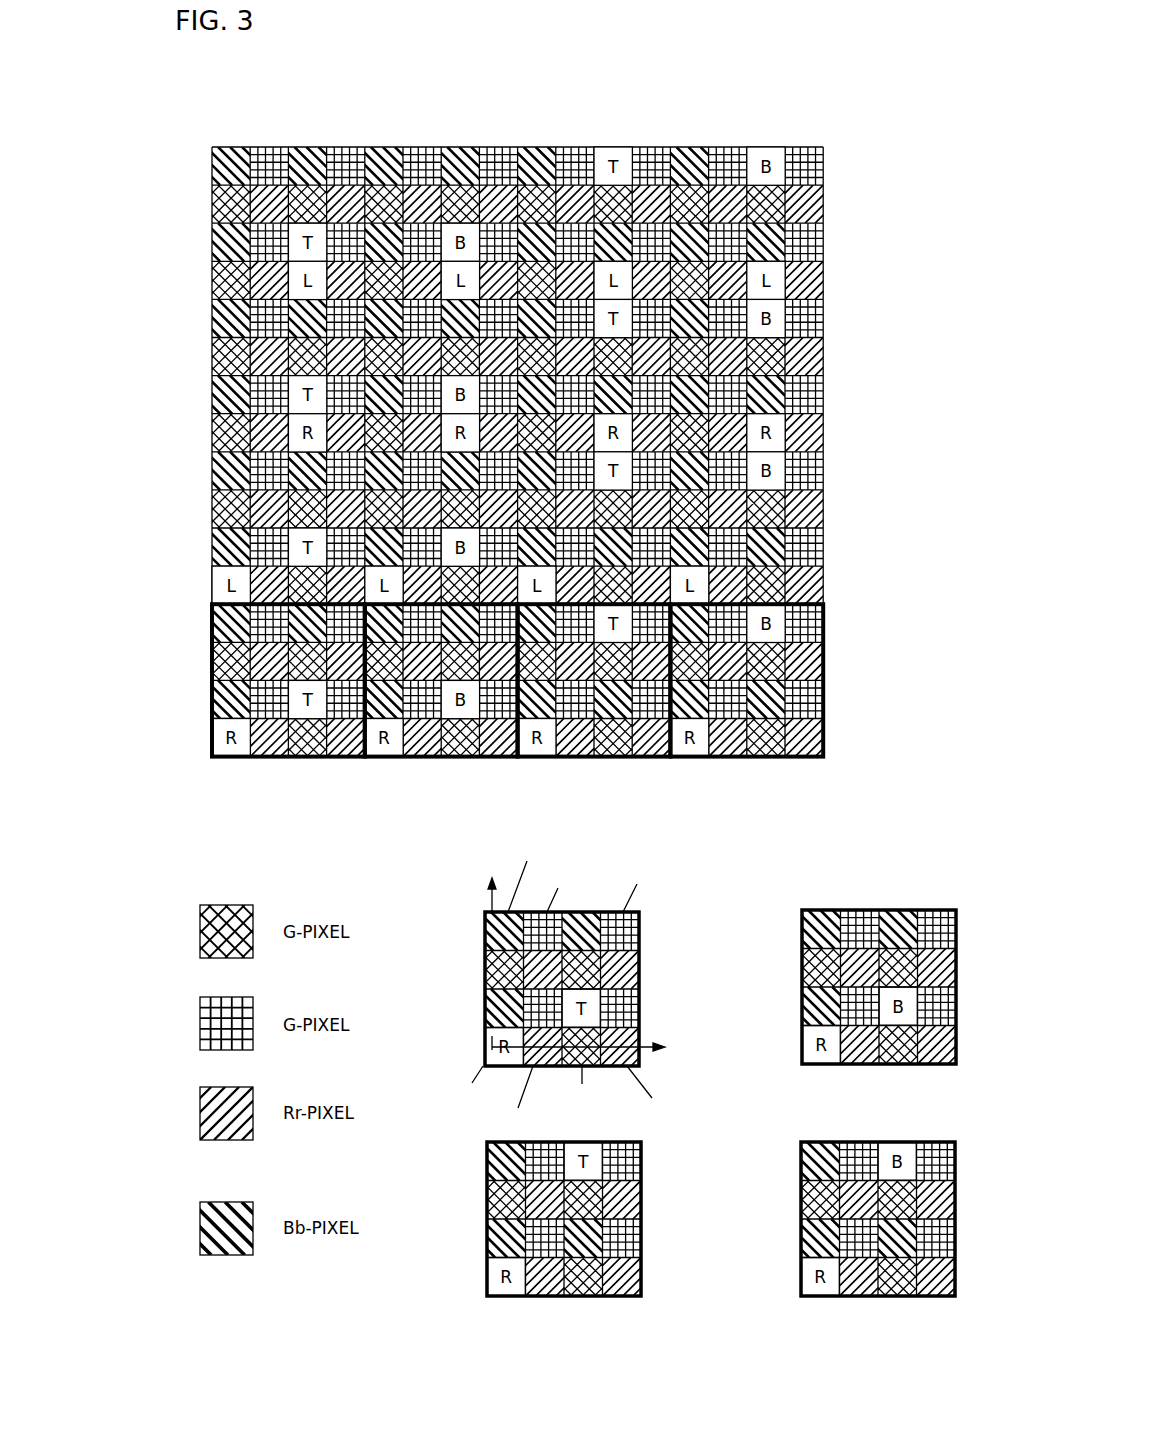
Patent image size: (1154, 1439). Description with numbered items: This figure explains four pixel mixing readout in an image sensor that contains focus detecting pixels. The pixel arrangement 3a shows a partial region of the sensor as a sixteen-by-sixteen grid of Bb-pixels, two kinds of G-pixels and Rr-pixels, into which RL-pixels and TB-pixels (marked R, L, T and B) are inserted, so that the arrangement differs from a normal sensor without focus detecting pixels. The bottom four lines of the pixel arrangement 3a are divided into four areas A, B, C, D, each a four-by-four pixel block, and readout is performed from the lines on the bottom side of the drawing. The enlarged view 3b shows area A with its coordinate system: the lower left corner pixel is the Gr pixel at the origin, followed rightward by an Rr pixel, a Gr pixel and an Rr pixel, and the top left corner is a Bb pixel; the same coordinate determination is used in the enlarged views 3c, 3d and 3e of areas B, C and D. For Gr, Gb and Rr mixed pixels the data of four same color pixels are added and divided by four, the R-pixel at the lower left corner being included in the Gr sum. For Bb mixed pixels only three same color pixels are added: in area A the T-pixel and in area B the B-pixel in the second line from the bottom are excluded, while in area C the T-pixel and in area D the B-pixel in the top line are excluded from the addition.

The pixel arrangement of a partial region 3a is at (416, 89).
The enlarged view of area A 3b is at (447, 941).
The enlarged view of area B 3c is at (767, 949).
The enlarged view of area C 3d is at (445, 1183).
The enlarged view of area D 3e is at (760, 1183).
The area A is at (281, 758).
The area B is at (433, 758).
The area C is at (586, 758).
The area D is at (741, 758).